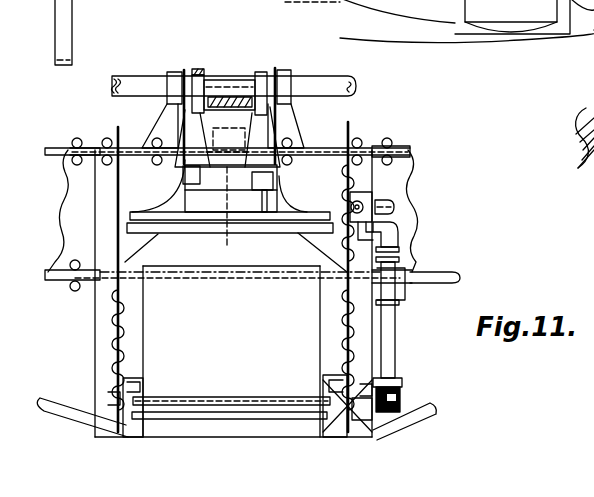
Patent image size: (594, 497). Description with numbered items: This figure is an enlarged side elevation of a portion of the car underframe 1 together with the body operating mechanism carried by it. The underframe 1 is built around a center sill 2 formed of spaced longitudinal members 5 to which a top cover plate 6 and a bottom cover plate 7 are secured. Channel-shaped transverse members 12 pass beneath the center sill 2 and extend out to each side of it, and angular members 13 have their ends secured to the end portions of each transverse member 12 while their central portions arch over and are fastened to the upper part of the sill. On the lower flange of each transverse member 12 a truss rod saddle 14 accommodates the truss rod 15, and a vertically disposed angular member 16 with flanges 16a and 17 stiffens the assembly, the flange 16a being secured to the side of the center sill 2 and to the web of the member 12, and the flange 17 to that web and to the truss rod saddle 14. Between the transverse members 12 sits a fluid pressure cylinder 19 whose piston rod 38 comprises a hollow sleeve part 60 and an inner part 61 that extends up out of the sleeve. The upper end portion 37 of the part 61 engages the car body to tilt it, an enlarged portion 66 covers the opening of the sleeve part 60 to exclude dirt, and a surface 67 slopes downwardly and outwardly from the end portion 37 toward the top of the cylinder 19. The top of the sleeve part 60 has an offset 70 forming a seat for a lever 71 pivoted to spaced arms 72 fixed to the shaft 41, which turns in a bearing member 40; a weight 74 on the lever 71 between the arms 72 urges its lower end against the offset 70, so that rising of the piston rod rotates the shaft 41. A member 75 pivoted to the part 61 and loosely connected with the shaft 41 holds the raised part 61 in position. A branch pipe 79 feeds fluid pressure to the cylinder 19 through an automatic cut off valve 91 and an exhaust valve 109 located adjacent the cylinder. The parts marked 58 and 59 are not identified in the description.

The underframe 1 is at (67, 189).
The center sill 2 is at (406, 234).
The longitudinal members 5 is at (394, 185).
The top cover plate 6 is at (394, 153).
The bottom cover plate 7 is at (68, 272).
The transverse members 12 is at (345, 291).
The angular members 13 is at (104, 153).
The truss rod saddle 14 is at (144, 421).
The truss rod 15 is at (363, 421).
The vertically disposed angular member 16 is at (108, 388).
The flange 16a is at (110, 398).
The flange 17 is at (120, 412).
The fluid pressure cylinder 19 is at (165, 327).
The end portion of piston rod 37 is at (237, 131).
The piston rod 38 is at (232, 139).
The bearing member 40 is at (172, 82).
The shaft 41 is at (358, 86).
The hatched member 58 is at (584, 156).
The curved member 59 is at (583, 122).
The hollow sleeve part 60 is at (230, 213).
The part of piston rod 61 is at (218, 170).
The enlarged portion 66 is at (265, 195).
The surface 67 is at (262, 165).
The offset 70 is at (185, 176).
The lever 71 is at (240, 133).
The spaced arms 72 is at (199, 92).
The weight 74 is at (229, 82).
The member 75 is at (200, 111).
The branch pipe 79 is at (395, 207).
The automatic cut off valve 91 is at (368, 206).
The exhaust valve 109 is at (402, 397).